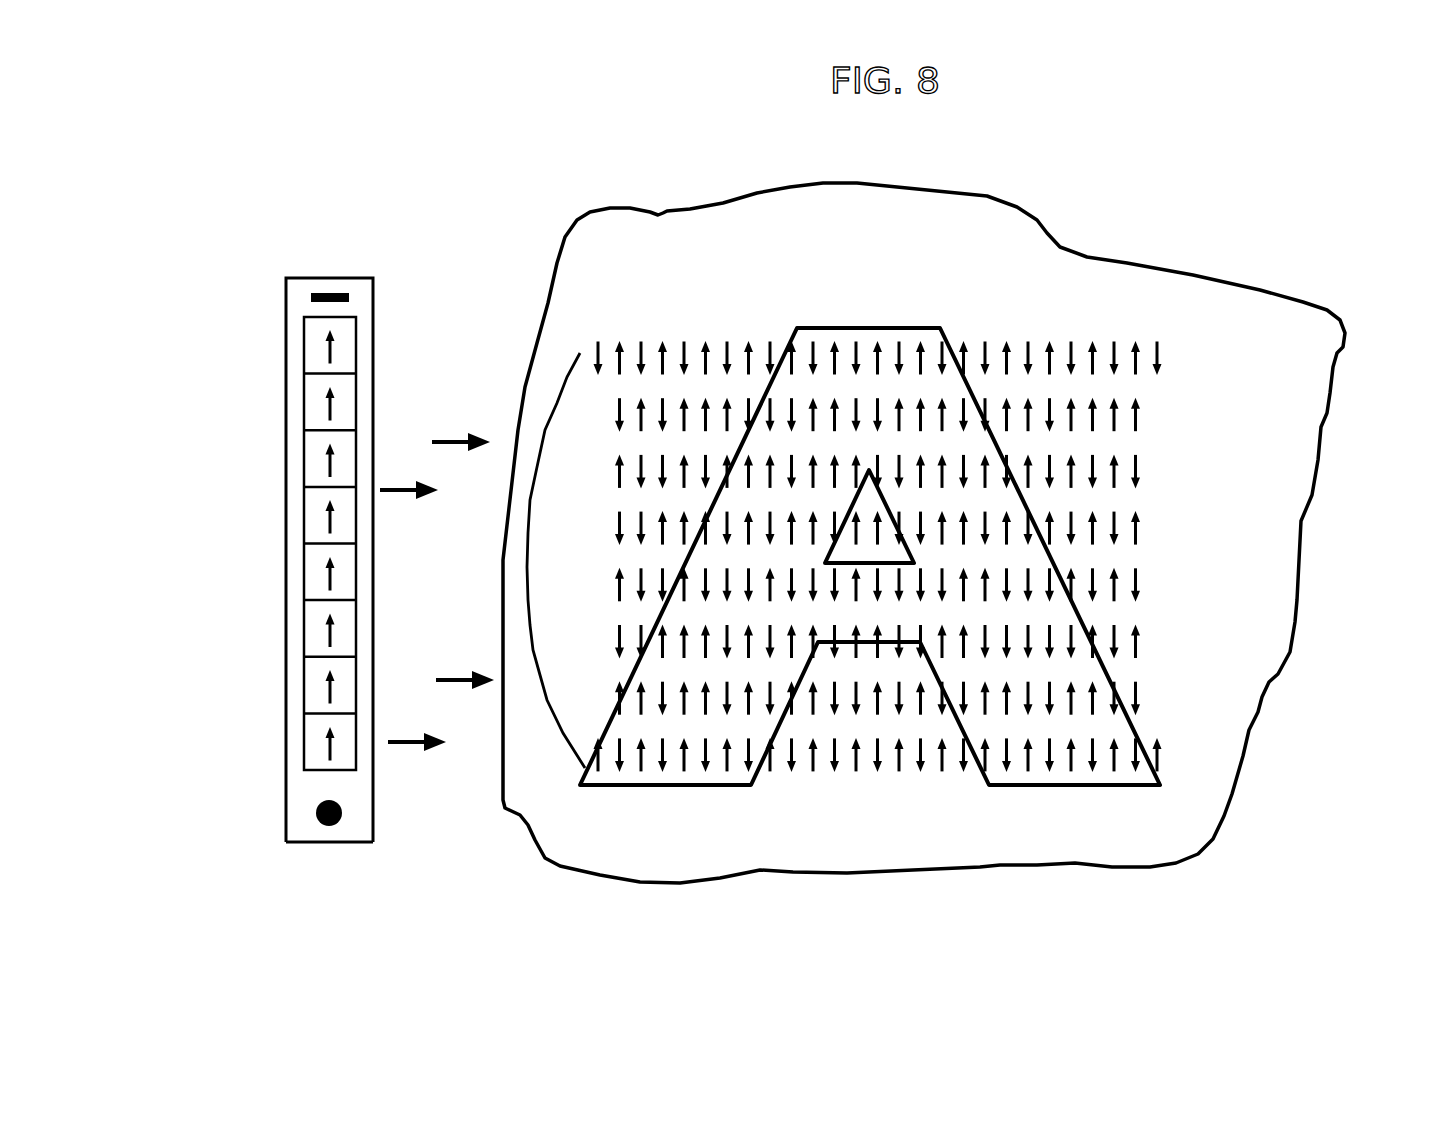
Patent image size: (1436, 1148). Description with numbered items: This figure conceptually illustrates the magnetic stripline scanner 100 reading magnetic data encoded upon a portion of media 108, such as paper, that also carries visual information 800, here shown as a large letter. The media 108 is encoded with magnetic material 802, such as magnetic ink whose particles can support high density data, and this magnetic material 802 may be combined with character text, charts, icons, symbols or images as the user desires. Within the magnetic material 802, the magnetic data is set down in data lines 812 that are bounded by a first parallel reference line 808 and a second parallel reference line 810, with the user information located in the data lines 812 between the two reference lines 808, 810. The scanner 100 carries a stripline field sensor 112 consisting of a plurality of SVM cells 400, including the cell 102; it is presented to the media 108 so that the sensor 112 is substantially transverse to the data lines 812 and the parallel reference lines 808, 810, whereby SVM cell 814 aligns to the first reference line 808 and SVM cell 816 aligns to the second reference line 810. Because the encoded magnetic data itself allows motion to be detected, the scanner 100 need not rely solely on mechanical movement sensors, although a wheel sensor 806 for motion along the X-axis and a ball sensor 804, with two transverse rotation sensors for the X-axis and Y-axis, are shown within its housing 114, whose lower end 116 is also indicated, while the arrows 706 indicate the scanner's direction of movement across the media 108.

The magnetic stripline scanner 100 is at (283, 252).
The magnetic write element 102 is at (290, 655).
The media 108 is at (1300, 312).
The stripline field sensor 112 is at (350, 323).
The housing 114 is at (357, 277).
The housing bottom end 116 is at (297, 843).
The SVM cells 400 is at (315, 525).
The direction of motion arrows 706 is at (437, 579).
The visual information 800 is at (875, 322).
The magnetic material 802 is at (528, 543).
The ball sensor 804 is at (342, 823).
The wheel sensor 806 is at (323, 293).
The first reference line 808 is at (1174, 332).
The second reference line 810 is at (1165, 728).
The data lines 812 is at (1159, 426).
The SVM cell 814 is at (318, 355).
The SVM cell 816 is at (318, 753).